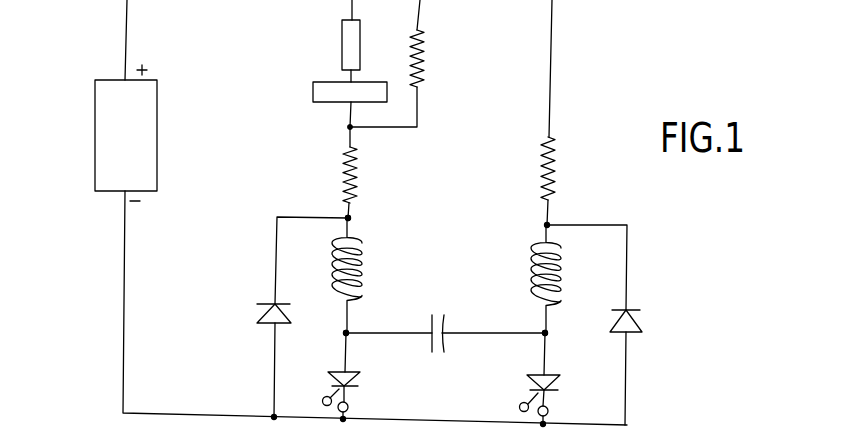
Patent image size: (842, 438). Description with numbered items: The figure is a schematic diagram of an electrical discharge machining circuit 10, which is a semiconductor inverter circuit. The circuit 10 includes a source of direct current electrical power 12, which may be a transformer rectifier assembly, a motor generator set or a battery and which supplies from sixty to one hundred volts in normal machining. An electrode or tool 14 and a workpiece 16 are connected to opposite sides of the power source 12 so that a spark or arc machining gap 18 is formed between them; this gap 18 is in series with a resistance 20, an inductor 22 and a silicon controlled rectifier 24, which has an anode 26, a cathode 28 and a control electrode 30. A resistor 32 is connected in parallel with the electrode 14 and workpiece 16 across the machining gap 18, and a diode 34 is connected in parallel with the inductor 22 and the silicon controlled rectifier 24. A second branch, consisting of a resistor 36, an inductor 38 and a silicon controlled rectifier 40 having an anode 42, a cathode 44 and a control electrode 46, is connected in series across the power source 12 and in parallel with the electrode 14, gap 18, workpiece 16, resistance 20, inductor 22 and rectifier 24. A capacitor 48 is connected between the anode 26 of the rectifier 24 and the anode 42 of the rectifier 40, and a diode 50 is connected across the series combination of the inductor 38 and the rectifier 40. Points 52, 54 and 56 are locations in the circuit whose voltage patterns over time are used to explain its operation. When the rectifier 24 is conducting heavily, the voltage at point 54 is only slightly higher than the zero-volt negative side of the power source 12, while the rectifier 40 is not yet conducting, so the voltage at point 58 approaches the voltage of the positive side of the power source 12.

The electrical discharge machining circuit 10 is at (90, 237).
The source of direct current electrical power 12 is at (158, 152).
The electrode or tool 14 is at (342, 33).
The workpiece 16 is at (313, 93).
The machining gap 18 is at (340, 77).
The resistance 20 is at (356, 157).
The inductor 22 is at (359, 249).
The silicon controlled rectifier 24 is at (353, 373).
The anode 26 is at (345, 349).
The cathode 28 is at (352, 401).
The control electrode 30 is at (323, 398).
The resistor 32 is at (428, 62).
The diode 34 is at (256, 311).
The resistor 36 is at (556, 147).
The inductor 38 is at (530, 259).
The silicon controlled rectifier 40 is at (538, 376).
The anode 42 is at (548, 346).
The cathode 44 is at (551, 412).
The control electrode 46 is at (520, 405).
The capacitor 48 is at (428, 322).
The diode 50 is at (643, 326).
The point 52 is at (350, 127).
The point 54 is at (345, 330).
The point 56 is at (543, 332).
The point 58 is at (351, 216).